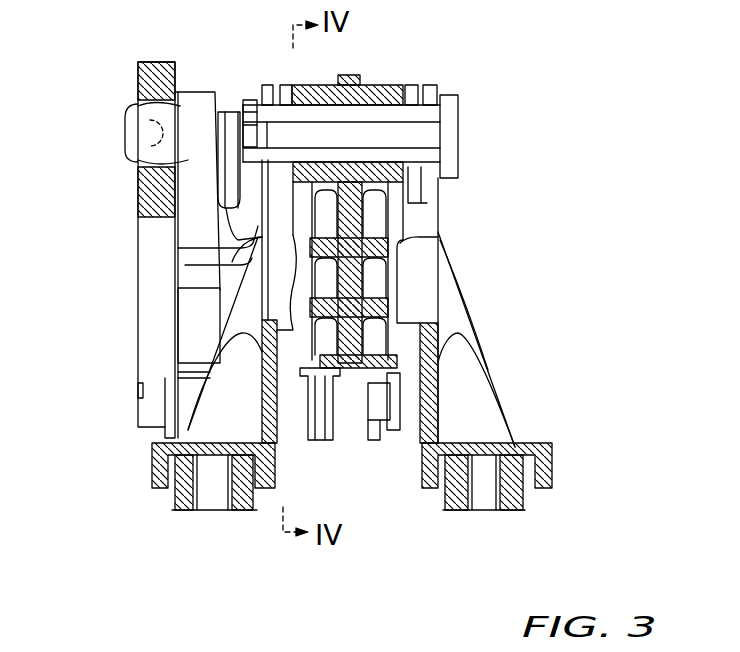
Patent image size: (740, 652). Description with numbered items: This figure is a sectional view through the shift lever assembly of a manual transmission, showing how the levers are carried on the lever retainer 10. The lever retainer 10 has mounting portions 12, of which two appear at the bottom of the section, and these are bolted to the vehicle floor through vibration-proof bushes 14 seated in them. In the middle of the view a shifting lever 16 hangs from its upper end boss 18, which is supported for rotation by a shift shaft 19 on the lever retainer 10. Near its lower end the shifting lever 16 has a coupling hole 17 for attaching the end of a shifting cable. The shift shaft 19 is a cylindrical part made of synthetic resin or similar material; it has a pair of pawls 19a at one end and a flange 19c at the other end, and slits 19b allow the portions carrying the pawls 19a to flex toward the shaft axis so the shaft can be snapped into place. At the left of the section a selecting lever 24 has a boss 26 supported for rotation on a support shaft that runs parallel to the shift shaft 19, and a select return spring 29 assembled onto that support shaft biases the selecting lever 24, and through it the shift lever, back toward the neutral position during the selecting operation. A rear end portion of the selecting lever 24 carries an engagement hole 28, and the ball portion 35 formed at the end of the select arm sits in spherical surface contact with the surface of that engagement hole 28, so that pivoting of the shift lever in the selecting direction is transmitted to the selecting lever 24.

The lever retainer 10 is at (425, 288).
The mounting portions 12 is at (155, 467).
The vibration-proof bushes 14 is at (183, 510).
The shifting lever 16 is at (377, 220).
The coupling hole 17 is at (377, 400).
The upper end boss 18 is at (383, 93).
The shift shaft 19 is at (430, 137).
The pawls 19a is at (237, 110).
The slits 19b is at (255, 100).
The flange 19c is at (450, 105).
The selecting lever 24 is at (150, 275).
The boss 26 is at (193, 100).
The engagement hole 28 is at (140, 105).
The select return spring 29 is at (218, 163).
The ball portion 35 is at (134, 130).